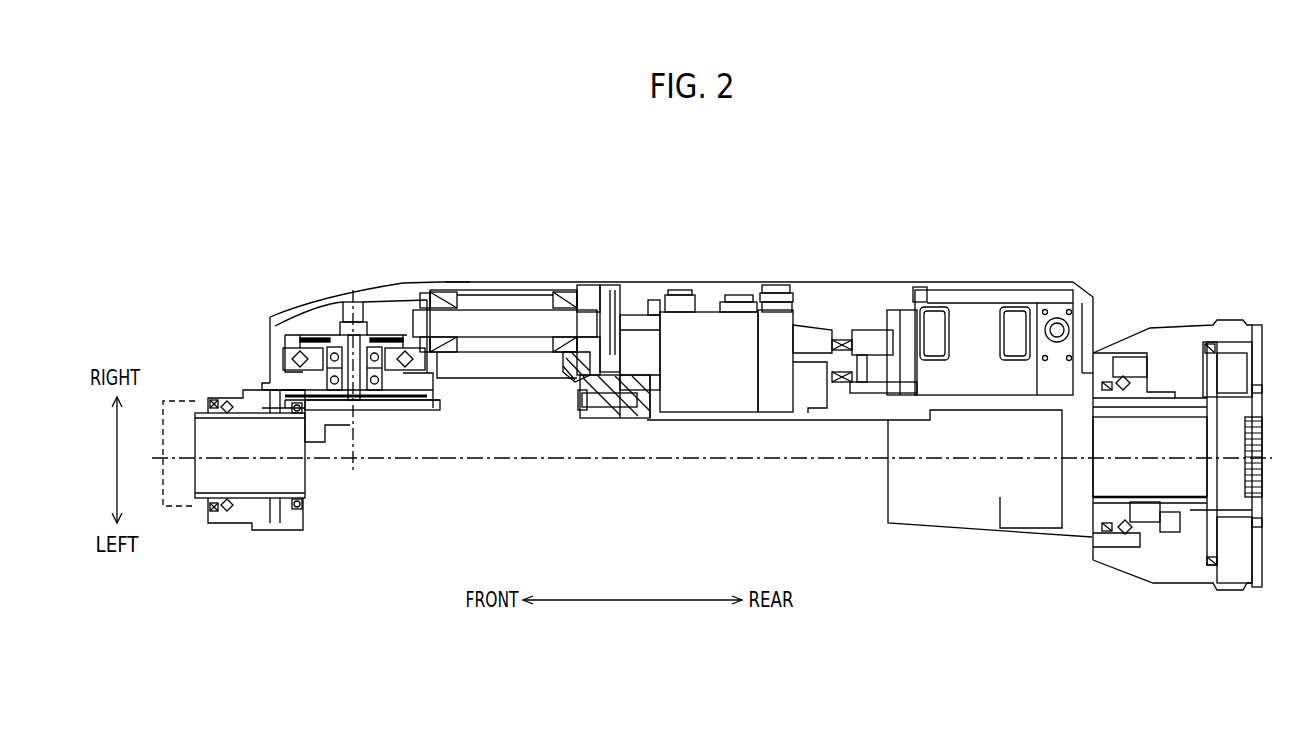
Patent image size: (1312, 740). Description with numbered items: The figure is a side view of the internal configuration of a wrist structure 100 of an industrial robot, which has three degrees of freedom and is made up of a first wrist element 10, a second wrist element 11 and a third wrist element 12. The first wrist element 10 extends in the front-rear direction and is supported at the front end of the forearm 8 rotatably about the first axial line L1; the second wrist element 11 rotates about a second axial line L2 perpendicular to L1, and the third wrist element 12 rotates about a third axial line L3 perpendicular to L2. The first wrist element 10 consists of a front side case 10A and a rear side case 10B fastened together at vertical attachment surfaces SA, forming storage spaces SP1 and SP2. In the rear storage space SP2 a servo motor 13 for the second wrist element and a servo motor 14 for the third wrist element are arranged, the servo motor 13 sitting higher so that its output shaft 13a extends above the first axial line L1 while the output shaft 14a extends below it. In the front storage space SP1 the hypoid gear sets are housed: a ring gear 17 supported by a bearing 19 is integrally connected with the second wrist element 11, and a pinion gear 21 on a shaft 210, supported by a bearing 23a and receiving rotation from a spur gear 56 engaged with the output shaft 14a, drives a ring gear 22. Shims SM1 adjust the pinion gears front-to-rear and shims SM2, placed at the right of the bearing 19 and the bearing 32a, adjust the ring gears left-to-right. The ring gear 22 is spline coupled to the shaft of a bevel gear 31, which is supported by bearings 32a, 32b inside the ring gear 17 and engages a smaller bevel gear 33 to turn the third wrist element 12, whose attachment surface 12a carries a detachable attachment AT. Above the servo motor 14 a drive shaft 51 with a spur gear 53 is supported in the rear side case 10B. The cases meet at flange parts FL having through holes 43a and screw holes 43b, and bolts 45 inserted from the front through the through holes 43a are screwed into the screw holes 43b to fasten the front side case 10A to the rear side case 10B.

The forearm 8 is at (1179, 286).
The first wrist element 10 is at (805, 280).
The front side case 10A is at (502, 288).
The rear side case 10B is at (940, 288).
The second wrist element 11 is at (441, 411).
The third wrist element 12 is at (240, 528).
The attachment surface 12a is at (193, 508).
The servo motor 13 is at (1003, 305).
The output shaft 13a is at (884, 330).
The servo motor 14 is at (707, 333).
The output shaft 14a is at (630, 350).
The ring gear 17 is at (275, 322).
The bearing 19 is at (453, 374).
The pinion gear 21 is at (415, 300).
The ring gear 22 is at (340, 318).
The bearing 23a is at (452, 282).
The bevel gear 31 is at (318, 424).
The bearing 32a is at (295, 359).
The bearing 32b is at (303, 385).
The bevel gear 33 is at (283, 527).
The through holes 43a is at (603, 420).
The screw holes 43b is at (650, 423).
The bolts 45 is at (576, 412).
The drive shaft 51 is at (807, 363).
The spur gear 53 is at (858, 383).
The spur gear 56 is at (610, 285).
The wrist structure 100 is at (1023, 194).
The shaft 210 is at (525, 315).
The attachment AT is at (165, 400).
The flange parts FL is at (612, 420).
The first axial line L1 is at (870, 459).
The second axial line L2 is at (356, 393).
The third axial line L3 is at (284, 459).
The attachment surfaces SA is at (640, 420).
The shims SM1 is at (437, 292).
The shims SM2 is at (305, 337).
The storage space SP1 is at (582, 292).
The storage space SP2 is at (838, 296).